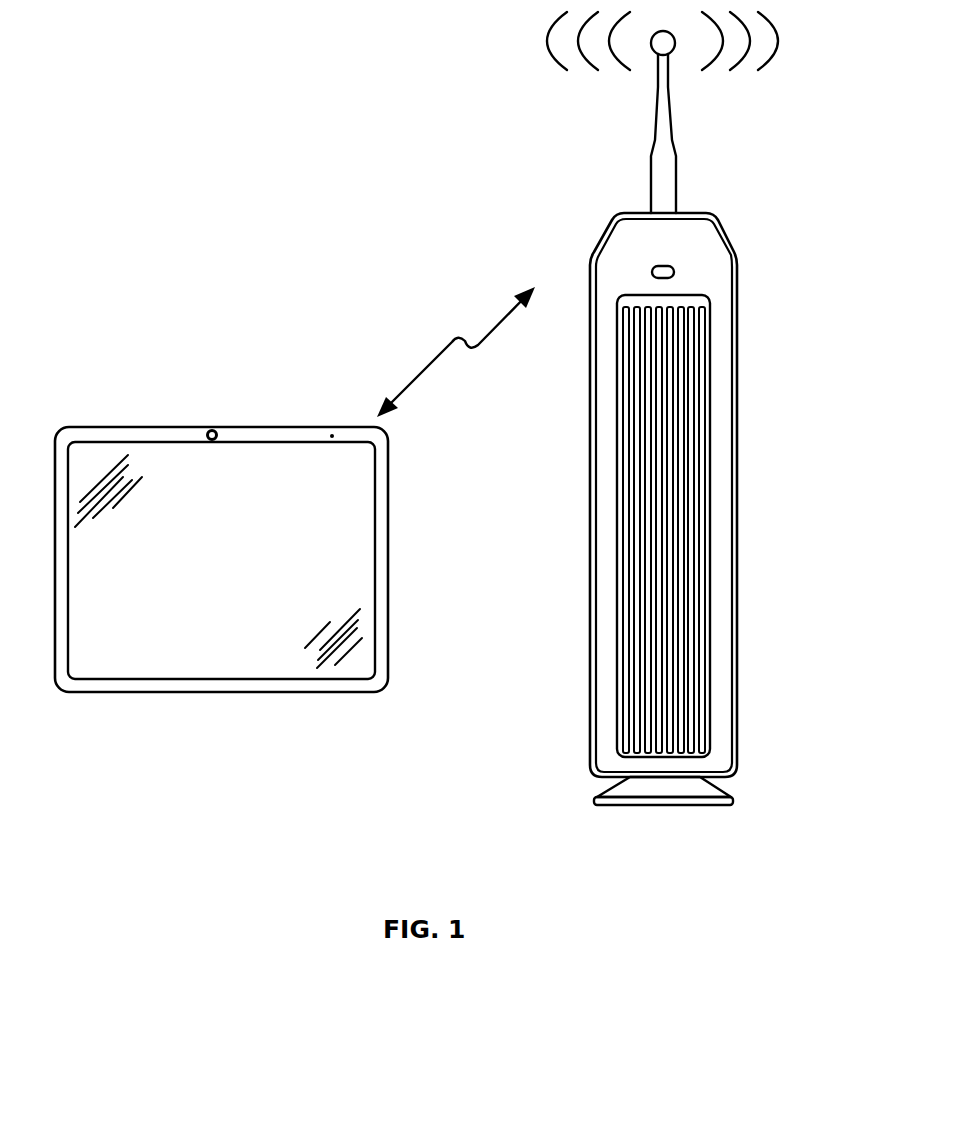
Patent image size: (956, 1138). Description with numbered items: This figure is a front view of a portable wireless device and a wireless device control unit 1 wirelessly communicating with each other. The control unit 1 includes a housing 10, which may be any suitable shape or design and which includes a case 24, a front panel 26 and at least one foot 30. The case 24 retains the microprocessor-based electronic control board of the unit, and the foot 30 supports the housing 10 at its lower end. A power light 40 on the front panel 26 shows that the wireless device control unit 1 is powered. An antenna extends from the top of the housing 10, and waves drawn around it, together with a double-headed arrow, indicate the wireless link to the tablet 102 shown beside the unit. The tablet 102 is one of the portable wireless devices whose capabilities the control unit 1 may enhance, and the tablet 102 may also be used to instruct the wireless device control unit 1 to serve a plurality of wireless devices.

The wireless device control unit 1 is at (740, 154).
The housing 10 is at (745, 607).
The case 24 is at (737, 490).
The front panel 26 is at (713, 283).
The foot 30 is at (727, 790).
The power light 40 is at (650, 268).
The tablet 102 is at (258, 425).